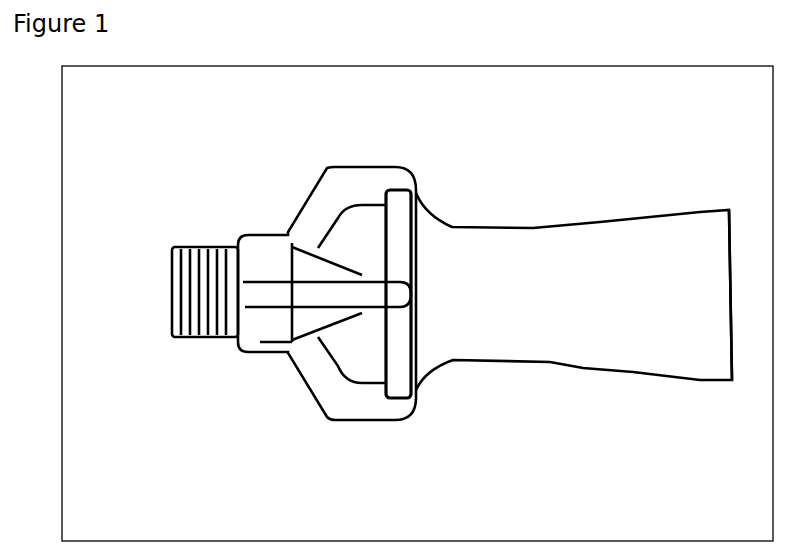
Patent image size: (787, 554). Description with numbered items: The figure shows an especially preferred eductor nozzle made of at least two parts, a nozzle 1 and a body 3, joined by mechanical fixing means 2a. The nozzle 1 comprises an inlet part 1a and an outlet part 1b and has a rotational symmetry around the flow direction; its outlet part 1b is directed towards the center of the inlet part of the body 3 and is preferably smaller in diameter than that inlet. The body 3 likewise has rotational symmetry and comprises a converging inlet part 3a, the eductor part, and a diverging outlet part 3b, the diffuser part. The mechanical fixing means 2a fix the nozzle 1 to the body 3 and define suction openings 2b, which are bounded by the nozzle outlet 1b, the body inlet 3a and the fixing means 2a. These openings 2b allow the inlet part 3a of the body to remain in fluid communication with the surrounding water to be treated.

The nozzle 1 is at (253, 230).
The inlet part 1a is at (167, 280).
The outlet part 1b is at (362, 273).
The mechanical fixing means 2a is at (313, 367).
The suction openings 2b is at (362, 352).
The body 3 is at (574, 291).
The converging inlet part 3a is at (418, 197).
The diverging outlet part 3b is at (677, 213).